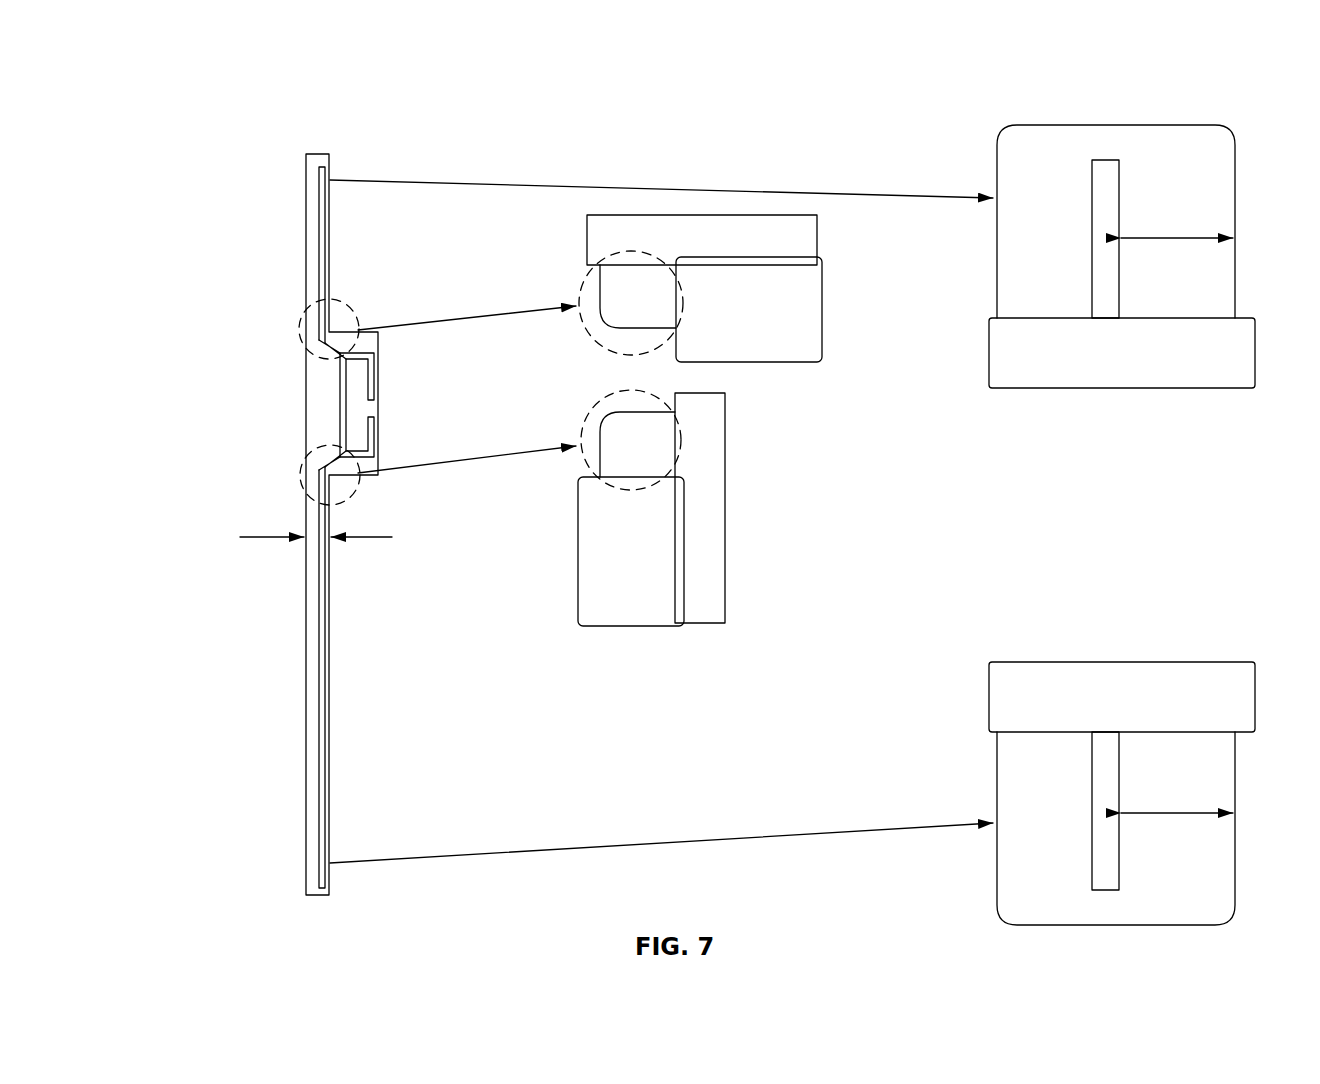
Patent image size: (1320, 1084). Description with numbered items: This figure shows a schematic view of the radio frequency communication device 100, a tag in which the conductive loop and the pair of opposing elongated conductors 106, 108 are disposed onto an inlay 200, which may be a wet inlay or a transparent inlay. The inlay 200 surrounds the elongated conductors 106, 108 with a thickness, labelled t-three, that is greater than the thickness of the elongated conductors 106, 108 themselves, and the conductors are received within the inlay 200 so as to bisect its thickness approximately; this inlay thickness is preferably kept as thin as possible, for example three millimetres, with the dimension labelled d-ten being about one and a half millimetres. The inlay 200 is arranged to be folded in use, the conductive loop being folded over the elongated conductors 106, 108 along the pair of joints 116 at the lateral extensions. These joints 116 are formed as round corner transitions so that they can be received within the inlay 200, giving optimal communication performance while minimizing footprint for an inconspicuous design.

The radio frequency communication device 100 is at (574, 104).
The elongated conductor 106 is at (320, 212).
The elongated conductor 108 is at (321, 793).
The joint 116 is at (323, 348).
The inlay 200 is at (306, 846).